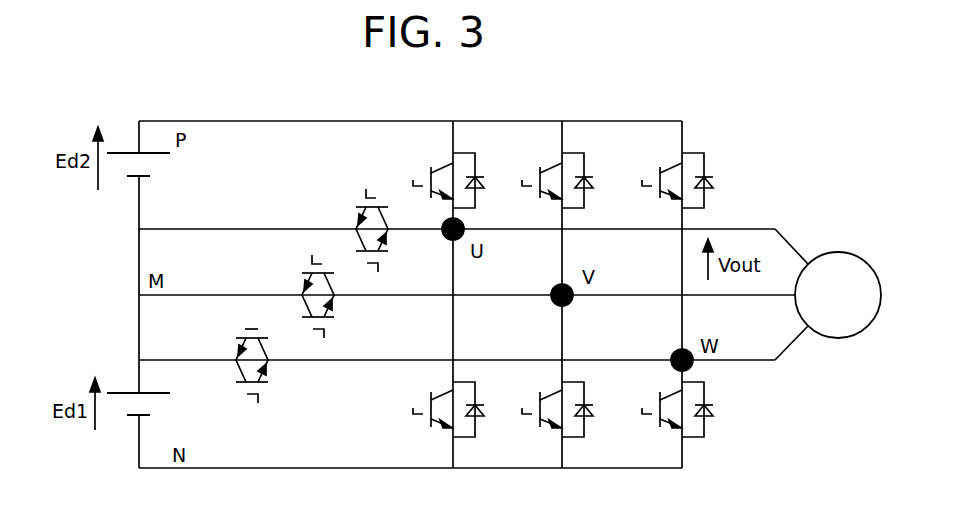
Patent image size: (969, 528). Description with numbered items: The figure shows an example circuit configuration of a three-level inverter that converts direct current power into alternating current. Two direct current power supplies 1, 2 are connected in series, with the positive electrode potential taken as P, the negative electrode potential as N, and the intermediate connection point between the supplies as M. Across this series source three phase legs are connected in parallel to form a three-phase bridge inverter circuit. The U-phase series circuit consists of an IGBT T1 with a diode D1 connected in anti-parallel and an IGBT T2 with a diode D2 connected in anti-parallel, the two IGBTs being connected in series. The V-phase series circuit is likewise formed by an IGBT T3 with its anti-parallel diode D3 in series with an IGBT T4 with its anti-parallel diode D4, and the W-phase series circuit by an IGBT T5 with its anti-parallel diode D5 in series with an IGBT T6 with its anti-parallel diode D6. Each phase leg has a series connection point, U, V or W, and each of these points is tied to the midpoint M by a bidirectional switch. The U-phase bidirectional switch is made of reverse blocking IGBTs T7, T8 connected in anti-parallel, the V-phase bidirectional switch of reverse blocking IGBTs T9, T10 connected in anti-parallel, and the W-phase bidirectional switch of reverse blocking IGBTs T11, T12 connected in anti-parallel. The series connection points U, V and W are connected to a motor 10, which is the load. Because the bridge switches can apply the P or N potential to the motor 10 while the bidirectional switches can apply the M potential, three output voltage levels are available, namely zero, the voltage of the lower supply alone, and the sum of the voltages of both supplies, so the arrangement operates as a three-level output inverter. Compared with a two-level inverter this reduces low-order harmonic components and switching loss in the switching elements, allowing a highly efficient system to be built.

The direct current power supply 1 is at (130, 197).
The direct current power supply 2 is at (130, 437).
The motor 10 is at (838, 265).
The IGBT T1 is at (432, 170).
The IGBT T2 is at (426, 420).
The IGBT T3 is at (542, 168).
The IGBT T4 is at (541, 397).
The IGBT T5 is at (662, 168).
The IGBT T6 is at (658, 397).
The reverse blocking IGBT T7 is at (357, 220).
The reverse blocking IGBT T8 is at (387, 239).
The reverse blocking IGBT T9 is at (305, 286).
The reverse blocking IGBT T10 is at (340, 305).
The reverse blocking IGBT T11 is at (233, 355).
The reverse blocking IGBT T12 is at (275, 370).
The diode D1 is at (482, 176).
The diode D2 is at (482, 407).
The diode D3 is at (589, 176).
The diode D4 is at (590, 413).
The diode D5 is at (711, 175).
The diode D6 is at (709, 408).